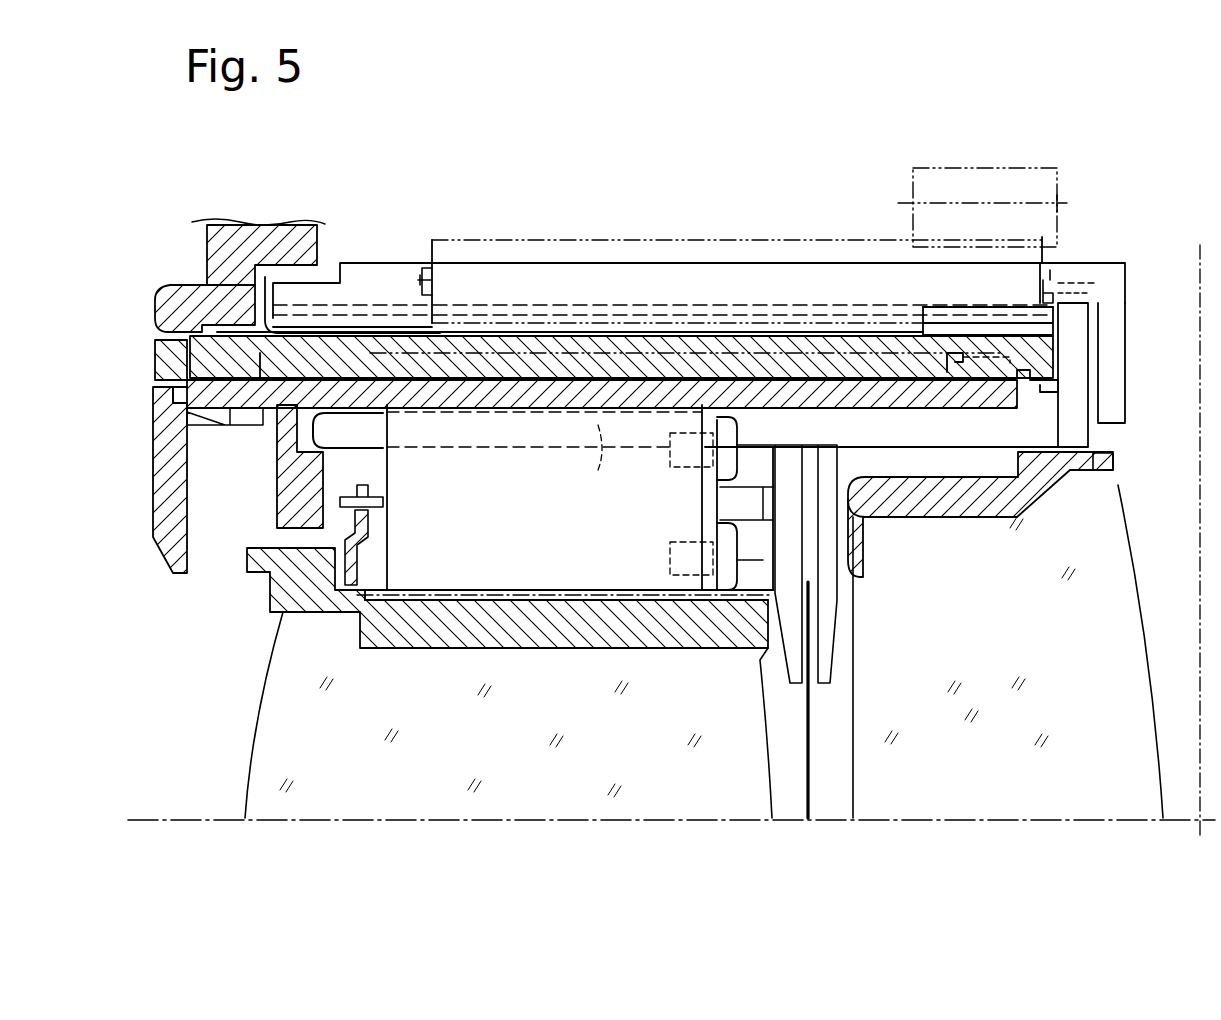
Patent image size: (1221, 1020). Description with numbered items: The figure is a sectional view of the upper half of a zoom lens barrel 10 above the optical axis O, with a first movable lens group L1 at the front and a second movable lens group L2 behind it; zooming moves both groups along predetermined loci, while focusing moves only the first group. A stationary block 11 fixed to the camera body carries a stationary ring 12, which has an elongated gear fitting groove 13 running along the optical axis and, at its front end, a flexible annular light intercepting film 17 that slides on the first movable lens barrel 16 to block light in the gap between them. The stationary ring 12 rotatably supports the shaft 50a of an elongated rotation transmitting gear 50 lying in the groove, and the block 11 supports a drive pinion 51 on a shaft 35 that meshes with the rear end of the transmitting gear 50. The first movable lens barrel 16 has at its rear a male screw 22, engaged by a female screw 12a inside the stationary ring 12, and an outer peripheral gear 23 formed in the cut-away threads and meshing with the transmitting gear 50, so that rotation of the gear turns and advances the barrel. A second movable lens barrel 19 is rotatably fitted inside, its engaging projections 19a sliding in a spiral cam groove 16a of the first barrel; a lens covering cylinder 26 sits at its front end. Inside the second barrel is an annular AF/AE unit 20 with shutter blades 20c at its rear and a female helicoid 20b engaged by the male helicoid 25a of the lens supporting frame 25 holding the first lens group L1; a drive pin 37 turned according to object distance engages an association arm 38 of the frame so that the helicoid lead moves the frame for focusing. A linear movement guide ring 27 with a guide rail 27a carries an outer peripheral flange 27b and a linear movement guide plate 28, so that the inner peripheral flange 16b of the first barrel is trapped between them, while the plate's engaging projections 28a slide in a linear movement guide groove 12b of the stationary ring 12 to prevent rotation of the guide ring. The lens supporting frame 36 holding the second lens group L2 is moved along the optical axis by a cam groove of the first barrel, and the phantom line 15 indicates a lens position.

The zoom lens barrel 10 is at (750, 166).
The stationary block 11 is at (268, 232).
The stationary ring 12 is at (1117, 270).
The female screw 12a is at (353, 307).
The linear movement guide groove 12b is at (1078, 293).
The gear fitting groove 13 is at (1048, 263).
The lens position line 15 is at (812, 236).
The first movable lens barrel 16 is at (563, 343).
The spiral cam groove 16a is at (960, 370).
The inner peripheral flange 16b is at (1098, 415).
The light intercepting film 17 is at (232, 323).
The second movable lens barrel 19 is at (542, 398).
The engaging projections 19a is at (1010, 363).
The AF/AE unit 20 is at (633, 572).
The female helicoid 20b is at (525, 597).
The shutter blades 20c is at (810, 785).
The male screw 22 is at (1047, 313).
The outer peripheral gear 23 is at (1054, 334).
The lens supporting frame 25 is at (442, 640).
The male helicoid 25a is at (548, 602).
The lens covering cylinder 26 is at (177, 485).
The linear movement guide ring 27 is at (892, 427).
The linear movement guide rail 27a is at (598, 470).
The outer peripheral flange 27b is at (1090, 452).
The linear movement guide plate 28 is at (1082, 423).
The engaging projections 28a is at (1098, 283).
The shaft 35 is at (1060, 203).
The lens supporting frame 36 is at (972, 514).
The drive pin 37 is at (370, 492).
The association arm 38 is at (370, 522).
The rotation transmitting gear 50 is at (653, 246).
The shaft 50a is at (422, 280).
The drive pinion 51 is at (988, 173).
The optical axis O is at (212, 821).
The first movable lens group L1 is at (495, 800).
The second movable lens group L2 is at (947, 800).